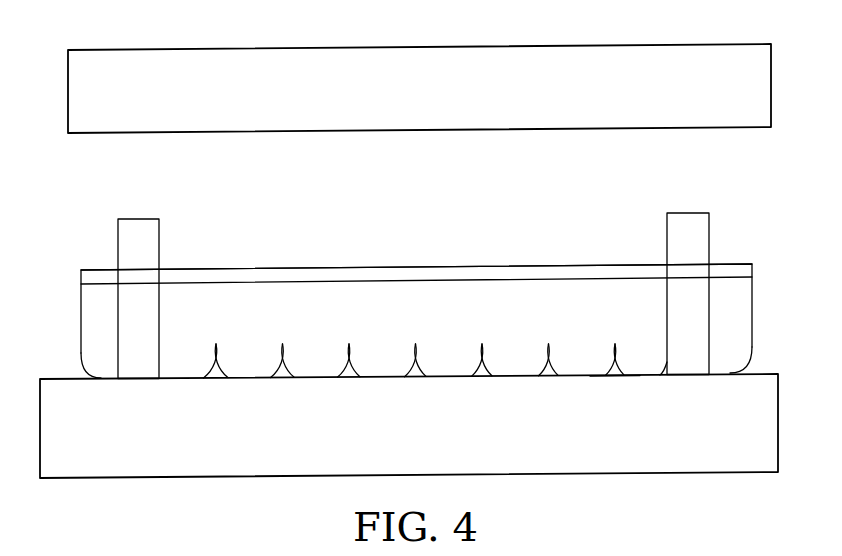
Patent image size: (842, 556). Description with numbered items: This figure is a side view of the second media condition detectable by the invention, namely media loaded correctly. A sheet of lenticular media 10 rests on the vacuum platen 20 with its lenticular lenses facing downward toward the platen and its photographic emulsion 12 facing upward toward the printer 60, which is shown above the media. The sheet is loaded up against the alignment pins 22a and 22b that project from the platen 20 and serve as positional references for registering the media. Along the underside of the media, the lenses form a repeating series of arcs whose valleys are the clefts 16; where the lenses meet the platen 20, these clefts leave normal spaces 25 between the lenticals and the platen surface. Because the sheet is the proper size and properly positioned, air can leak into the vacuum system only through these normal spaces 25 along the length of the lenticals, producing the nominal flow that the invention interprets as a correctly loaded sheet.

The printer 60 is at (180, 50).
The vacuum platen 20 is at (137, 478).
The lenticular media 10 is at (100, 318).
The photographic emulsion 12 is at (430, 275).
The alignment pin 22a is at (146, 240).
The alignment pin 22b is at (690, 238).
The cleft 16 is at (615, 344).
The normal spaces 25 is at (617, 376).